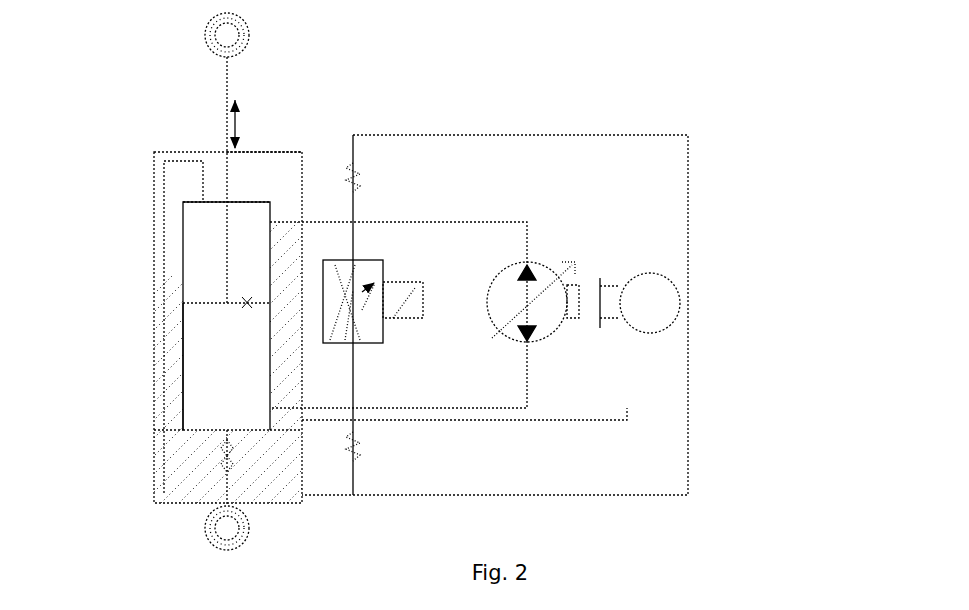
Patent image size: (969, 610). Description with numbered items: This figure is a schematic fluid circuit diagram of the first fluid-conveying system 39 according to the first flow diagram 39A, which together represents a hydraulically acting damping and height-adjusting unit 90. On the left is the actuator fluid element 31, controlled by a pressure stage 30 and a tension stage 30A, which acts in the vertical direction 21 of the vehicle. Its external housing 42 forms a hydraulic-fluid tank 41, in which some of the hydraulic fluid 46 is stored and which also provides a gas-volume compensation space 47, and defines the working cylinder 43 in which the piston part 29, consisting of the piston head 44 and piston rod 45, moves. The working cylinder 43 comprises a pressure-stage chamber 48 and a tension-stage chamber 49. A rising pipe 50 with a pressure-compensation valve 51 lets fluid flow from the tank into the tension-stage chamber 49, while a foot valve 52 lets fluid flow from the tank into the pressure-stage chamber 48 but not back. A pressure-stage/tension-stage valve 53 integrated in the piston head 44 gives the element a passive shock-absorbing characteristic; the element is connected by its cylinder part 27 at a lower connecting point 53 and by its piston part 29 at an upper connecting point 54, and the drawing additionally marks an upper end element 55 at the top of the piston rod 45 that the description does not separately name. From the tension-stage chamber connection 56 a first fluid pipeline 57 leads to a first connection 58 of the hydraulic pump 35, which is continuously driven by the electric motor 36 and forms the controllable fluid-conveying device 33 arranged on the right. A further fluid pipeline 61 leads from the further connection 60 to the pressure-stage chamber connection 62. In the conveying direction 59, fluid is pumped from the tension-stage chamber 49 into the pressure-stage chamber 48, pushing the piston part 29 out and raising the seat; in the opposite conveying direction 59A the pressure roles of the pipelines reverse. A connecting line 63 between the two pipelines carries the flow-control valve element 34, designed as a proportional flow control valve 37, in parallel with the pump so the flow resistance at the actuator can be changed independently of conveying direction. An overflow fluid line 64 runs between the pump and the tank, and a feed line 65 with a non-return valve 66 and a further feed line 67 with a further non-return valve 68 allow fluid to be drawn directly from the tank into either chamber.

The vertical direction 21 is at (236, 127).
The cylinder part 27 is at (287, 150).
The piston part 29 is at (213, 248).
The pressure stage 30 is at (172, 368).
The tension stage 30A is at (165, 258).
The actuator fluid element 31 is at (305, 522).
The controllable fluid-conveying device 33 is at (545, 432).
The flow-control valve element 34 is at (379, 432).
The hydraulic pump 35 is at (545, 265).
The electric motor 36 is at (650, 273).
The proportional flow control valve 37 is at (386, 345).
The first fluid-conveying system 39 is at (674, 80).
The first flow diagram 39A is at (574, 80).
The hydraulic-fluid tank 41 is at (185, 490).
The external housing 42 is at (152, 498).
The working cylinder 43 is at (183, 405).
The piston head 44 is at (203, 305).
The piston rod 45 is at (227, 121).
The hydraulic fluid 46 is at (259, 488).
The gas-volume compensation space 47 is at (259, 188).
The pressure-stage chamber 48 is at (213, 384).
The tension-stage chamber 49 is at (236, 266).
The rising pipe 50 is at (154, 188).
The pressure-compensation valve 51 is at (200, 178).
The foot valve 52 is at (222, 468).
The pressure-stage/tension-stage valve 53 is at (245, 303).
The upper connecting point 54 is at (246, 537).
The upper mounting eye 55 is at (205, 35).
The tension-stage chamber connection 56 is at (270, 222).
The first fluid pipeline 57 is at (448, 222).
The first connection 58 is at (524, 268).
The conveying direction 59 is at (520, 337).
The opposite conveying direction 59A is at (524, 270).
The further connection 60 is at (526, 342).
The further fluid pipeline 61 is at (527, 388).
The pressure-stage chamber connection 62 is at (290, 410).
The connecting line 63 is at (353, 247).
The overflow fluid line 64 is at (467, 422).
The feed line 65 is at (452, 135).
The non-return valve 66 is at (360, 170).
The further feed line 67 is at (354, 390).
The further non-return valve 68 is at (355, 458).
The damping and height-adjusting unit 90 is at (633, 511).